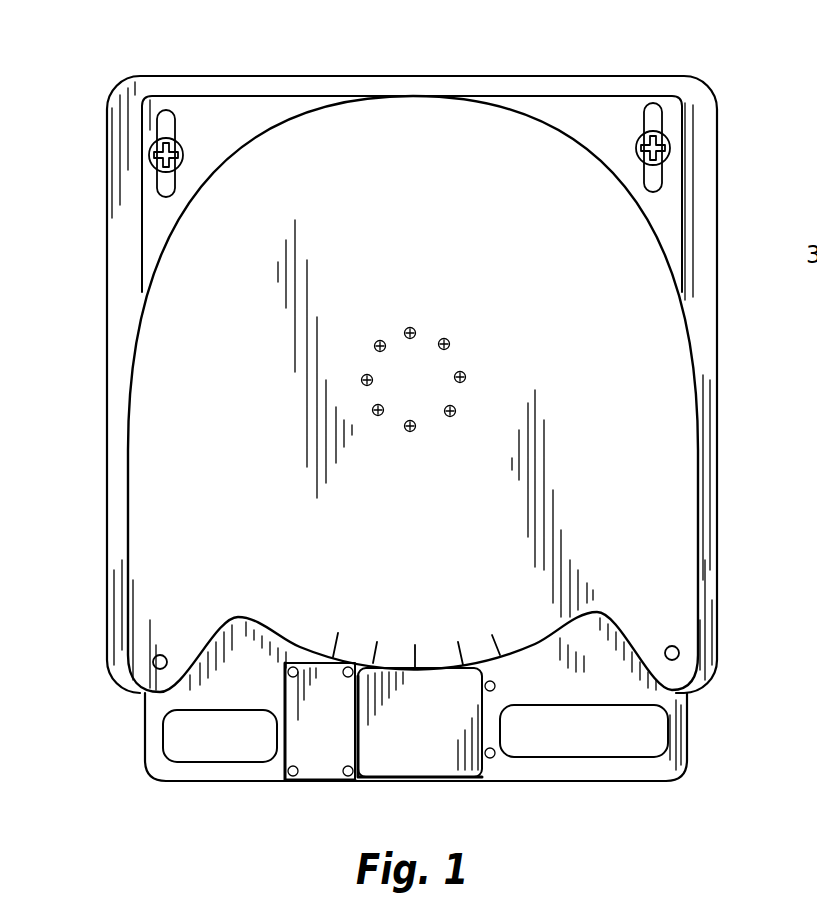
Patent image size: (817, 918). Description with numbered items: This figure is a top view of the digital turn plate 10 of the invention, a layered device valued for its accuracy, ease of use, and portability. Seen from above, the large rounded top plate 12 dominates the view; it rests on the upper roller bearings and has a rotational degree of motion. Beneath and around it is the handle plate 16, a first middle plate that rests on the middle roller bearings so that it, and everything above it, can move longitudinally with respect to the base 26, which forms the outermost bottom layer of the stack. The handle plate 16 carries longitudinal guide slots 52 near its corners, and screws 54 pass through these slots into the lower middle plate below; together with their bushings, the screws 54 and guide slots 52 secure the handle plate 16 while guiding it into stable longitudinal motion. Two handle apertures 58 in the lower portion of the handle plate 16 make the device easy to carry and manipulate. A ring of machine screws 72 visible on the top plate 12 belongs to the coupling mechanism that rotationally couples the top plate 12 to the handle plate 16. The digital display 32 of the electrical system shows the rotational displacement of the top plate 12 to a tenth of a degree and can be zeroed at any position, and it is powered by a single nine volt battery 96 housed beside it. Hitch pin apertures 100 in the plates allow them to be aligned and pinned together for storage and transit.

The turn plate 10 is at (748, 75).
The top plate 12 is at (416, 510).
The handle plate 16 is at (142, 252).
The base 26 is at (107, 378).
The digital display 32 is at (444, 754).
The longitudinal guide slots 52 is at (176, 131).
The screws 54 is at (183, 155).
The handle apertures 58 is at (242, 761).
The machine screws 72 is at (465, 375).
The battery 96 is at (338, 742).
The hitch pin apertures 100 is at (161, 655).